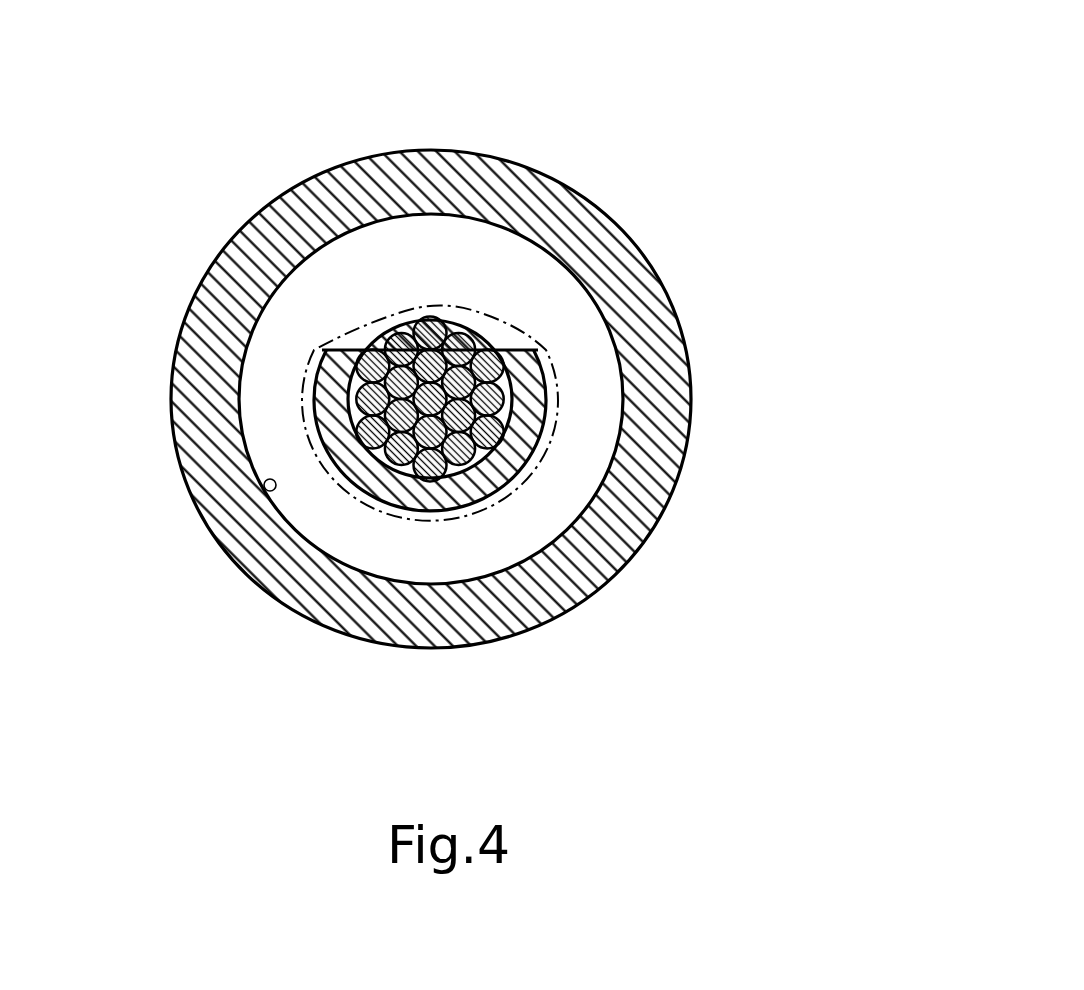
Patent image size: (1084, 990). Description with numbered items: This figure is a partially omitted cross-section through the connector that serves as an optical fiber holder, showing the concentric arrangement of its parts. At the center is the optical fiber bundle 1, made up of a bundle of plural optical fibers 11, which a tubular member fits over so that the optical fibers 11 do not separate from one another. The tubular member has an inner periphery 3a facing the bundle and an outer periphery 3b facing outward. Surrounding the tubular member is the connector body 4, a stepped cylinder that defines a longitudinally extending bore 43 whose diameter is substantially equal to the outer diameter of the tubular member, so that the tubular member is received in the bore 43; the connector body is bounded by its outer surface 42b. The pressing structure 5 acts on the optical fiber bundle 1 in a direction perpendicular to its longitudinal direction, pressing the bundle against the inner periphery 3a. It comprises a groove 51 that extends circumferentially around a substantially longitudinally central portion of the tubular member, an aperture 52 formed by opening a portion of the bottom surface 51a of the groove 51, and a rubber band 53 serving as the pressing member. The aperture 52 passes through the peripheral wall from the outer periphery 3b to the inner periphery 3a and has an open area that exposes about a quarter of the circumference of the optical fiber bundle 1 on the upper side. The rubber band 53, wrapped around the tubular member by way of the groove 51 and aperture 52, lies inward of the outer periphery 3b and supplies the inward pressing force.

The optical fiber bundle 1 is at (490, 383).
The inner periphery of the tubular member 3a is at (365, 497).
The outer periphery of the tubular member 3b is at (396, 587).
The connector body 4 is at (438, 386).
The pressing structure 5 is at (473, 393).
The optical fibers 11 is at (522, 363).
The outer surface of sheath 42b is at (242, 218).
The bore 43 is at (262, 494).
The groove 51 is at (590, 485).
The bottom surface of the groove 51a is at (547, 410).
The aperture 52 is at (377, 335).
The rubber band 53 is at (520, 327).